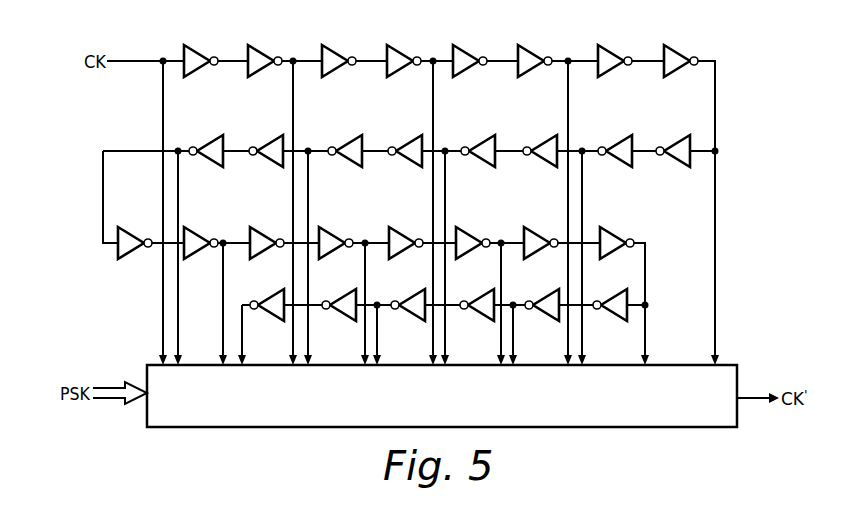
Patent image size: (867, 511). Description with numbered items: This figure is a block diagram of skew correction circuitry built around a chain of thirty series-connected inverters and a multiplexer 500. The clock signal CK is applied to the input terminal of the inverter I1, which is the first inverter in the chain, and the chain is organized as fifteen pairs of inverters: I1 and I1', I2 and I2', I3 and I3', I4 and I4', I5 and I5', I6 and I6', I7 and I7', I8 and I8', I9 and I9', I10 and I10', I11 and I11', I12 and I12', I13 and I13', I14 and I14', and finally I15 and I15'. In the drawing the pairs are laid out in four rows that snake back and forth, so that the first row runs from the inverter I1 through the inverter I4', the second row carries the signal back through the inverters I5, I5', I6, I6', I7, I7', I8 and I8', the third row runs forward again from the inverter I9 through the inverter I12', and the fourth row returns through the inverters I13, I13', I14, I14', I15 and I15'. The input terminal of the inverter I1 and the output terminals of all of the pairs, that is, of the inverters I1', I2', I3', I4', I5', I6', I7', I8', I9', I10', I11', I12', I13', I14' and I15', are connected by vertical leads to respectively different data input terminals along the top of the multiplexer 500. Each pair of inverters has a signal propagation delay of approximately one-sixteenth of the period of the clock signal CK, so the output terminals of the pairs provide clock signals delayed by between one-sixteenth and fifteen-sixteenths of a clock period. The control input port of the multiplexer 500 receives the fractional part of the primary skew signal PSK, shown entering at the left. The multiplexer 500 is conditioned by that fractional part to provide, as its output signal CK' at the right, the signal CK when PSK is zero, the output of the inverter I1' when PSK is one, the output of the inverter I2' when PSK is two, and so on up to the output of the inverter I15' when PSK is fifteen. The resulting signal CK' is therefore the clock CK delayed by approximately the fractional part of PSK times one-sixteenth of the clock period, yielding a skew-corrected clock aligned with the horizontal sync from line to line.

The multiplexer 500 is at (697, 428).
The inverter I1 is at (201, 49).
The inverter I1' is at (265, 49).
The inverter I2 is at (339, 49).
The inverter I2' is at (404, 49).
The inverter I3 is at (470, 49).
The inverter I3' is at (535, 49).
The inverter I4 is at (615, 49).
The inverter I4' is at (681, 49).
The inverter I5 is at (673, 139).
The inverter I5' is at (615, 139).
The inverter I6 is at (540, 139).
The inverter I6' is at (478, 139).
The inverter I7 is at (405, 139).
The inverter I7' is at (345, 139).
The inverter I8 is at (266, 139).
The inverter I8' is at (206, 139).
The inverter I9 is at (135, 231).
The inverter I9' is at (201, 231).
The inverter I10 is at (269, 231).
The inverter I10' is at (339, 231).
The inverter I11 is at (408, 231).
The inverter I11' is at (476, 231).
The inverter I12 is at (543, 231).
The inverter I12' is at (620, 231).
The inverter I13 is at (610, 293).
The inverter I13' is at (544, 293).
The inverter I14 is at (477, 293).
The inverter I14' is at (410, 293).
The inverter I15 is at (339, 293).
The inverter I15' is at (269, 293).